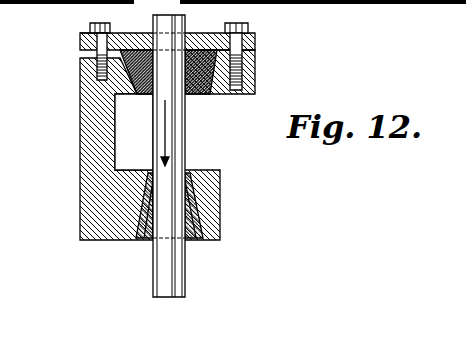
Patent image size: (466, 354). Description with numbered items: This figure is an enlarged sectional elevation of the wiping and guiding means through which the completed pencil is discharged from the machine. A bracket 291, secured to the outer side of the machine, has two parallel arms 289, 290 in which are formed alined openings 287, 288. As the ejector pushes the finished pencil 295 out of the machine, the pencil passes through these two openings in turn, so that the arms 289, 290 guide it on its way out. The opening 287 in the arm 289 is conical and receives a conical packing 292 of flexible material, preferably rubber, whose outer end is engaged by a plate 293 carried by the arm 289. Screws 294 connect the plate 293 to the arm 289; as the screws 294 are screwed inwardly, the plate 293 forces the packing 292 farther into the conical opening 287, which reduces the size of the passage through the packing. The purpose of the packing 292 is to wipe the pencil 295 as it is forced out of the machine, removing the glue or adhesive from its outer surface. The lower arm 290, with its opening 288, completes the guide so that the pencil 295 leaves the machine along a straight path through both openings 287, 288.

The opening 287 is at (186, 33).
The opening 288 is at (189, 188).
The arm 289 is at (254, 89).
The arm 290 is at (210, 208).
The bracket 291 is at (88, 147).
The conical packing 292 is at (145, 97).
The plate 293 is at (128, 33).
The screws 294 is at (80, 43).
The pencil 295 is at (184, 138).